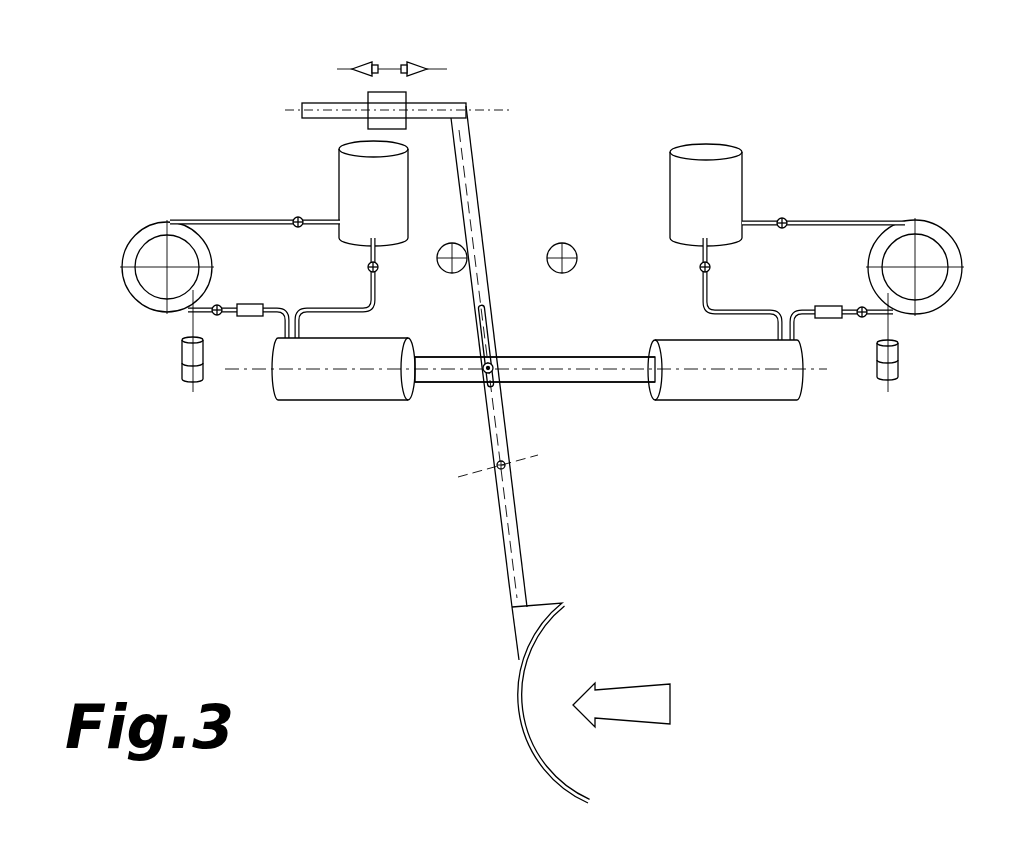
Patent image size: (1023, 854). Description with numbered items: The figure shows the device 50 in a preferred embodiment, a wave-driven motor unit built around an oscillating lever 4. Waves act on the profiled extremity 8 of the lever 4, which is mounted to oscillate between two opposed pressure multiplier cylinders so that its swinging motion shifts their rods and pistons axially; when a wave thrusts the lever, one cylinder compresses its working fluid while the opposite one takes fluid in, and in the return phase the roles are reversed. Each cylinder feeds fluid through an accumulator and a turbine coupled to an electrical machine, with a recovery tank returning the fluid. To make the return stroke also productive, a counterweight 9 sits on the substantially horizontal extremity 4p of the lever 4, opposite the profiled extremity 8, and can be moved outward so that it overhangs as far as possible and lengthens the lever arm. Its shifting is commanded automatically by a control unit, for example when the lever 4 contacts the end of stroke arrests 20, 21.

The lever 4 is at (500, 560).
The substantially horizontal extremity of the lever 4p is at (320, 102).
The profiled extremity 8 is at (525, 745).
The counterweight 9 is at (392, 92).
The end of stroke arrest 20 is at (440, 270).
The end of stroke arrest 21 is at (560, 243).
The device 50 is at (604, 128).